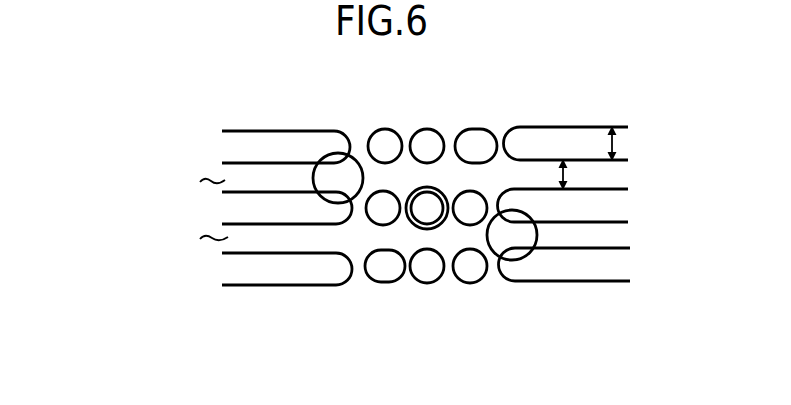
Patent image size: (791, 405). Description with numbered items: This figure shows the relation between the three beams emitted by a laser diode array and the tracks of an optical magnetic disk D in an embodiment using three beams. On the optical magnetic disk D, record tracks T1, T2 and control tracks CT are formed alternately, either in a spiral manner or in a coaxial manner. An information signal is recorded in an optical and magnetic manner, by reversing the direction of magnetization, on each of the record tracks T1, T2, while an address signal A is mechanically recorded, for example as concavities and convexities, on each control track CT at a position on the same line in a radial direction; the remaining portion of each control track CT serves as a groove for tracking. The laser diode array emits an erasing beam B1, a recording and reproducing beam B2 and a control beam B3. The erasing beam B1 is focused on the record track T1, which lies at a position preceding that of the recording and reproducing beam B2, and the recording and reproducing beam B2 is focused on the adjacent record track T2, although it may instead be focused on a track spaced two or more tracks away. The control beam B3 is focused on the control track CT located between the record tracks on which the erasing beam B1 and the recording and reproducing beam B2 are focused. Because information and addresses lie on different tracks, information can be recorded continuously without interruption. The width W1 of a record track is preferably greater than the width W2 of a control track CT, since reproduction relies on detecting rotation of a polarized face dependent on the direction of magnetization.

The optical magnetic disk D is at (268, 292).
The control track CT is at (527, 136).
The address signal A is at (420, 292).
The erasing beam B1 is at (333, 166).
The recording and reproducing beam B2 is at (531, 239).
The control beam B3 is at (446, 188).
The width of record track W1 is at (586, 176).
The width of control track W2 is at (633, 143).
The record track T1 is at (203, 183).
The record track T2 is at (204, 239).